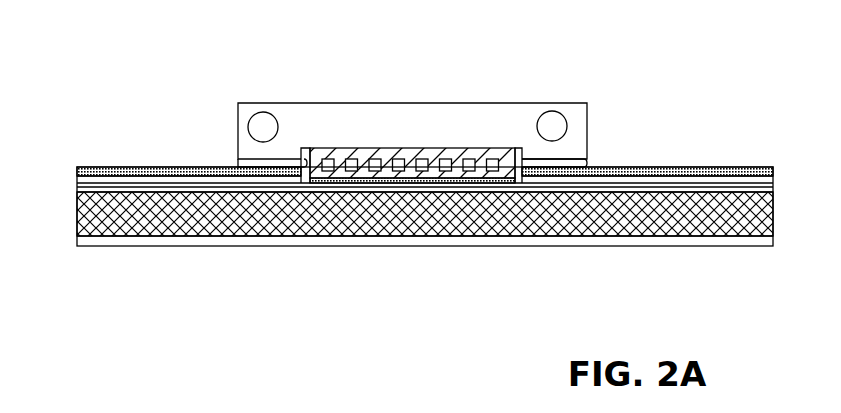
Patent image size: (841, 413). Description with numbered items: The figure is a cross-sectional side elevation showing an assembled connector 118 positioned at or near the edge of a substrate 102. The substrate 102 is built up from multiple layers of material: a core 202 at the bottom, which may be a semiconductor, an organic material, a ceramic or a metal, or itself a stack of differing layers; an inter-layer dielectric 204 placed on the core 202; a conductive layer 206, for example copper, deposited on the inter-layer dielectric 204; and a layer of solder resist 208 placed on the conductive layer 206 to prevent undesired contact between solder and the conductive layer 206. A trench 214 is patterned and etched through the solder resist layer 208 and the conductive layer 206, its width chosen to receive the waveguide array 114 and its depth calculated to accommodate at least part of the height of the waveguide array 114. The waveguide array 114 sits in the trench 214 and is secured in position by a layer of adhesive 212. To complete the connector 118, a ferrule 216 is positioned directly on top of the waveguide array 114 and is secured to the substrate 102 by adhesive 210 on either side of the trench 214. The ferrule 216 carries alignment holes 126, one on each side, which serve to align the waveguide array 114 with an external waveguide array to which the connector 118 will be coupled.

The substrate 102 is at (779, 167).
The waveguide array 114 is at (380, 185).
The connector 118 is at (463, 77).
The alignment holes 126 is at (263, 121).
The core 202 is at (76, 222).
The inter-layer dielectric 204 is at (77, 190).
The conductive layer 206 is at (77, 179).
The solder resist layer 208 is at (92, 167).
The adhesive 210 is at (240, 161).
The layer of adhesive 212 is at (453, 185).
The trench 214 is at (310, 185).
The ferrule 216 is at (347, 115).